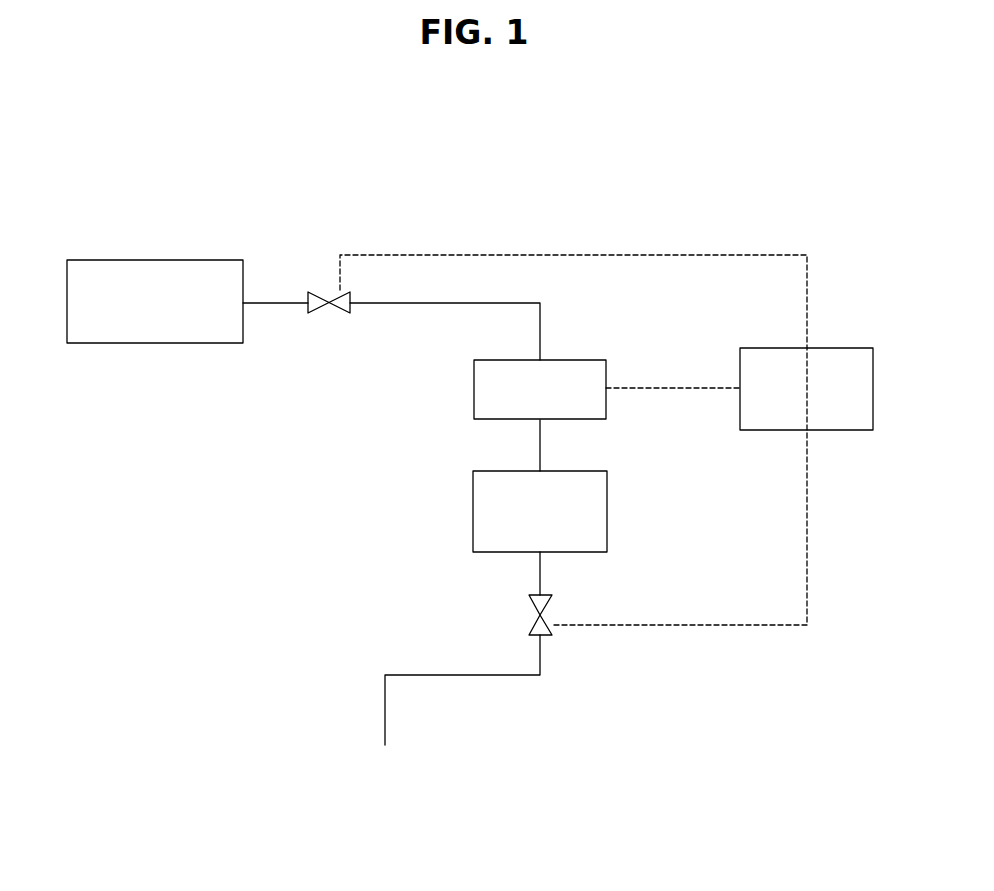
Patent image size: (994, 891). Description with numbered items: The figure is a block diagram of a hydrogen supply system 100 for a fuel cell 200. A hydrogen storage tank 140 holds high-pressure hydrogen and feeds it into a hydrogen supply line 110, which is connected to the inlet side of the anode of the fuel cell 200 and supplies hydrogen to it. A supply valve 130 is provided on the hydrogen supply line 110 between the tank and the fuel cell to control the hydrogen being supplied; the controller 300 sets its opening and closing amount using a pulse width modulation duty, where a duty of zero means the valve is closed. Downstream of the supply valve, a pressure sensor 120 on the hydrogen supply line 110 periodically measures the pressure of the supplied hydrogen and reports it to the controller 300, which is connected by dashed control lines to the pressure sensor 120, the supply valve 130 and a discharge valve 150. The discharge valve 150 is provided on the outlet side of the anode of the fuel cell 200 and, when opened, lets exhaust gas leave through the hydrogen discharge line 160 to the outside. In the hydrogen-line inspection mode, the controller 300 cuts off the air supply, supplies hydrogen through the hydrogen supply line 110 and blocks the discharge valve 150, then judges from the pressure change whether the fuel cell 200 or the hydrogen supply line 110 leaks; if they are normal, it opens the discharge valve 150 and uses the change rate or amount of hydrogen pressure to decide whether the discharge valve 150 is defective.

The hydrogen supply system 100 is at (546, 248).
The hydrogen supply line 110 is at (432, 300).
The pressure sensor 120 is at (474, 390).
The supply valve 130 is at (336, 310).
The hydrogen storage tank 140 is at (121, 260).
The discharge valve 150 is at (529, 624).
The hydrogen discharge line 160 is at (460, 676).
The fuel cell 200 is at (473, 508).
The controller 300 is at (843, 348).